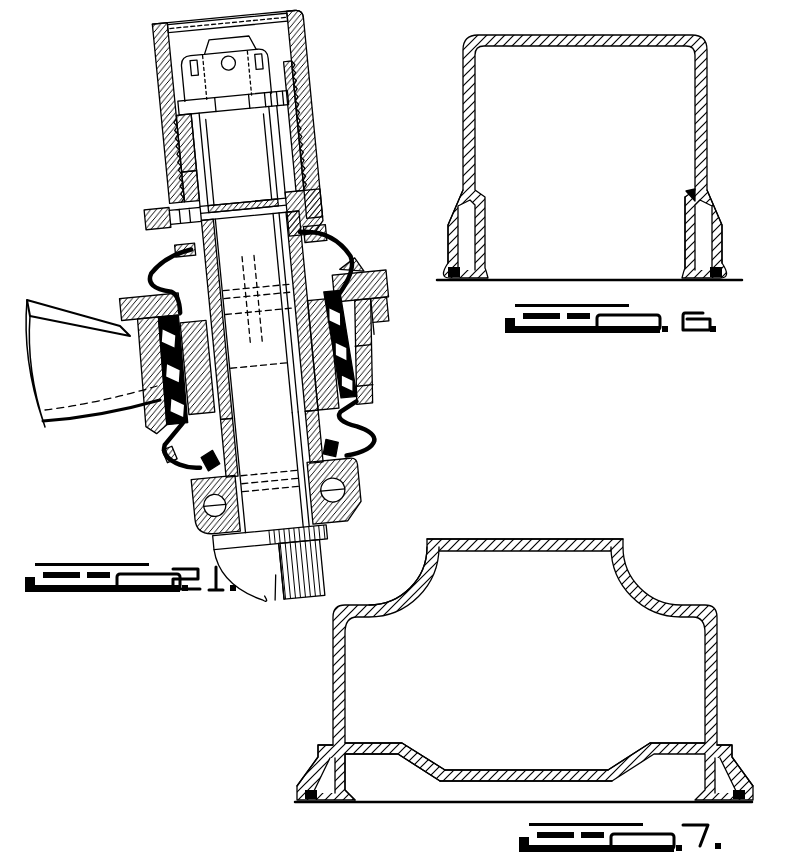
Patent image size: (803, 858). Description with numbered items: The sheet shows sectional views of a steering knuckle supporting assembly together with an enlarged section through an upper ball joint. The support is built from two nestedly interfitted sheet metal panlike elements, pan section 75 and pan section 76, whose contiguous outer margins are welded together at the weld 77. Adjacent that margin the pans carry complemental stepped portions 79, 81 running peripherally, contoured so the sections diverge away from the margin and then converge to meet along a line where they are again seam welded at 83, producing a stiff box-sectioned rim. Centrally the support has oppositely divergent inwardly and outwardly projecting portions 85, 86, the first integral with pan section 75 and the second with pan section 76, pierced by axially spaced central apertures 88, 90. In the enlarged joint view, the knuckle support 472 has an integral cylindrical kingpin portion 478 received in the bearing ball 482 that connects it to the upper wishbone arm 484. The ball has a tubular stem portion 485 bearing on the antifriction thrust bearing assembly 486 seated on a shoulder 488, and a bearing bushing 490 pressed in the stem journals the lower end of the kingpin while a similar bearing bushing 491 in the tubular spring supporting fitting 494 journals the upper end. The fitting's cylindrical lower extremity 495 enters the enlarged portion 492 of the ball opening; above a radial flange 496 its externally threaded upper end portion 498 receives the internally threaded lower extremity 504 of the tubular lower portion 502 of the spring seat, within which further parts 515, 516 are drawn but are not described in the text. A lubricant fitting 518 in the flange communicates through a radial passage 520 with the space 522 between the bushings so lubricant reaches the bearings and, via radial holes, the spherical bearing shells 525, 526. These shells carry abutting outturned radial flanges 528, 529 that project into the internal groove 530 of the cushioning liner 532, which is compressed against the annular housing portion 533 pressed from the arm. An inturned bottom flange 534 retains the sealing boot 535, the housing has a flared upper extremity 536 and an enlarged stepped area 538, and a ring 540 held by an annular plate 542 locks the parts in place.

In FIG. 6, the pan section 76 is at (720, 191).
In FIG. 7, the pan section 76 is at (688, 606).
In FIG. 6, the seam weld 83 is at (690, 192).
In FIG. 7, the seam weld 83 is at (710, 741).
In FIG. 6, the stepped portion 81 is at (721, 228).
In FIG. 7, the stepped portion 81 is at (318, 750).
In FIG. 6, the pan section 75 is at (498, 252).
In FIG. 7, the pan section 75 is at (393, 736).
In FIG. 6, the stepped portion 79 is at (686, 268).
In FIG. 7, the stepped portion 79 is at (350, 803).
In FIG. 6, the weld 77 is at (716, 282).
In FIG. 7, the weld 77 is at (727, 801).
In FIG. 7, the central aperture 90 is at (443, 549).
In FIG. 7, the outwardly projecting portion 86 is at (408, 598).
In FIG. 7, the inwardly projecting portion 85 is at (420, 750).
In FIG. 7, the central aperture 88 is at (492, 773).
In FIG. 21, the tubular spring supporting fitting 494 is at (330, 187).
In FIG. 21, the tubular lower portion 502 is at (165, 48).
In FIG. 21, the cup 515 is at (276, 66).
In FIG. 21, the flange 516 is at (292, 96).
In FIG. 21, the bearing bushing 491 is at (177, 127).
In FIG. 21, the internal threads 504 is at (172, 147).
In FIG. 21, the radial passage 520 is at (172, 181).
In FIG. 21, the upper end portion 498 is at (294, 128).
In FIG. 21, the radial flange 496 is at (310, 201).
In FIG. 21, the kingpin portion 478 is at (318, 230).
In FIG. 21, the lubricant fitting 518 is at (146, 215).
In FIG. 21, the cylindrical lower extremity 495 is at (284, 322).
In FIG. 21, the space 522 is at (249, 217).
In FIG. 21, the bearing bushing 490 is at (297, 418).
In FIG. 21, the spherical bearing shell 526 is at (180, 303).
In FIG. 21, the outturned radial flange 528 is at (140, 353).
In FIG. 21, the outturned radial flange 529 is at (153, 378).
In FIG. 21, the ring 540 is at (390, 287).
In FIG. 21, the flared upper extremity 536 is at (392, 302).
In FIG. 21, the bearing ball 482 is at (362, 346).
In FIG. 21, the annular housing portion 533 is at (380, 320).
In FIG. 21, the internal groove 530 is at (367, 362).
In FIG. 21, the cushioning liner 532 is at (354, 378).
In FIG. 21, the annular plate 542 is at (348, 257).
In FIG. 21, the enlarged portion 492 is at (318, 245).
In FIG. 21, the tubular stem portion 485 is at (324, 427).
In FIG. 21, the spherical bearing shell 525 is at (163, 433).
In FIG. 21, the inturned bottom flange 534 is at (170, 448).
In FIG. 21, the sealing boot 535 is at (177, 470).
In FIG. 21, the antifriction thrust bearing assembly 486 is at (202, 505).
In FIG. 21, the shoulder 488 is at (220, 542).
In FIG. 21, the knuckle support 472 is at (258, 598).
In FIG. 21, the upper wishbone arm 484 is at (60, 283).
In FIG. 21, the stepped area 538 is at (132, 395).